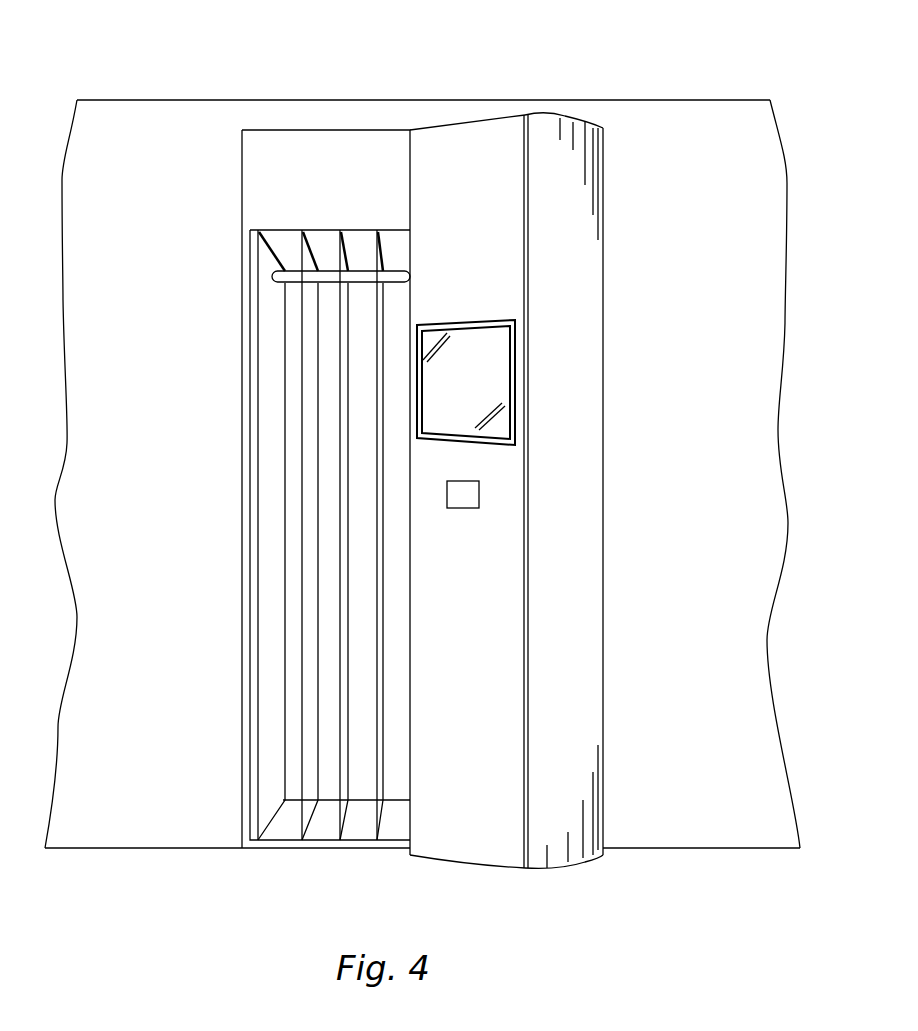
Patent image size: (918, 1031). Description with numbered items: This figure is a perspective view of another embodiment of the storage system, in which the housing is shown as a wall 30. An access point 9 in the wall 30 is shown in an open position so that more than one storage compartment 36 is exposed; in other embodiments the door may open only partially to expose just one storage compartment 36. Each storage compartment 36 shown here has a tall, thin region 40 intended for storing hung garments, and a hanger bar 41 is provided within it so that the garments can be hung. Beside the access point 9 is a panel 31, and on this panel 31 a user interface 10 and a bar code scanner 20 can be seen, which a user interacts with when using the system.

The access point 9 is at (242, 96).
The user interface 10 is at (498, 362).
The bar code scanner 20 is at (470, 498).
The wall 30 is at (130, 805).
The panel 31 is at (484, 846).
The storage compartment 36 is at (282, 827).
The tall, thin region 40 is at (328, 745).
The hanger bar 41 is at (286, 270).